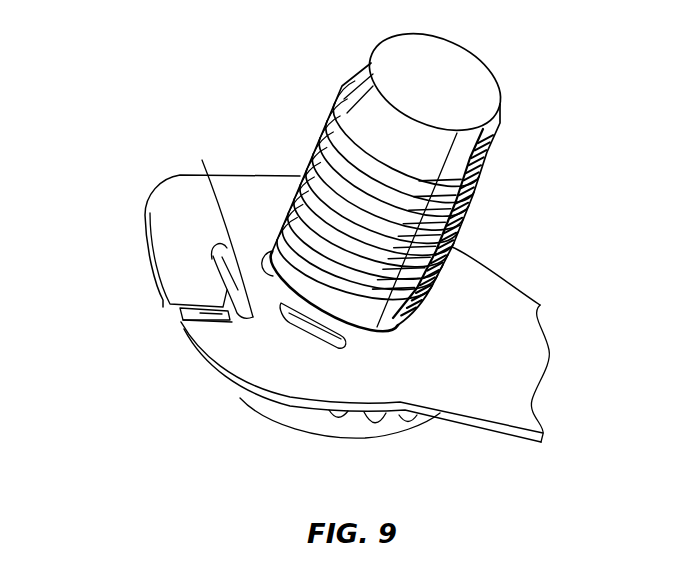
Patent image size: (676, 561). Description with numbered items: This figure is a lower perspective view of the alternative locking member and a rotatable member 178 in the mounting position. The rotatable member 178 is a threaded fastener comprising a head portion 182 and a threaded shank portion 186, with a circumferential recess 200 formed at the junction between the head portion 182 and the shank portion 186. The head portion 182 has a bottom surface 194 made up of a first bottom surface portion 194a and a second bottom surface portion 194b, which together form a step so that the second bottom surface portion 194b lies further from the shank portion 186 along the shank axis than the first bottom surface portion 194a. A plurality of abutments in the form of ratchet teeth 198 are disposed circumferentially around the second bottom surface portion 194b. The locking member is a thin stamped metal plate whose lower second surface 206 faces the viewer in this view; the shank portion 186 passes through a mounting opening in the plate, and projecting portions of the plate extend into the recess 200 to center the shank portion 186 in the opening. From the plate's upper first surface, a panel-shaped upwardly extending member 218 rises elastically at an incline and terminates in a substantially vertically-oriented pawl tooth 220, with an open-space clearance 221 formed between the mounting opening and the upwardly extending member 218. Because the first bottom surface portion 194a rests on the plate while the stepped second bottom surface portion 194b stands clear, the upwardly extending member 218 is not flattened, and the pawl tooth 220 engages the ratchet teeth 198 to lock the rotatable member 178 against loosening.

The rotatable member 178 is at (522, 125).
The threaded shank portion 186 is at (313, 153).
The first bottom surface portion 194a is at (202, 160).
The open-space clearance 221 is at (213, 247).
The upwardly extending member 218 is at (150, 267).
The pawl tooth 220 is at (163, 307).
The second bottom surface portion 194b is at (182, 322).
The circumferential recess 200 is at (303, 328).
The bottom surface 194 is at (348, 421).
The ratchet teeth 198 is at (385, 425).
The head portion 182 is at (417, 424).
The lower second surface 206 is at (497, 322).